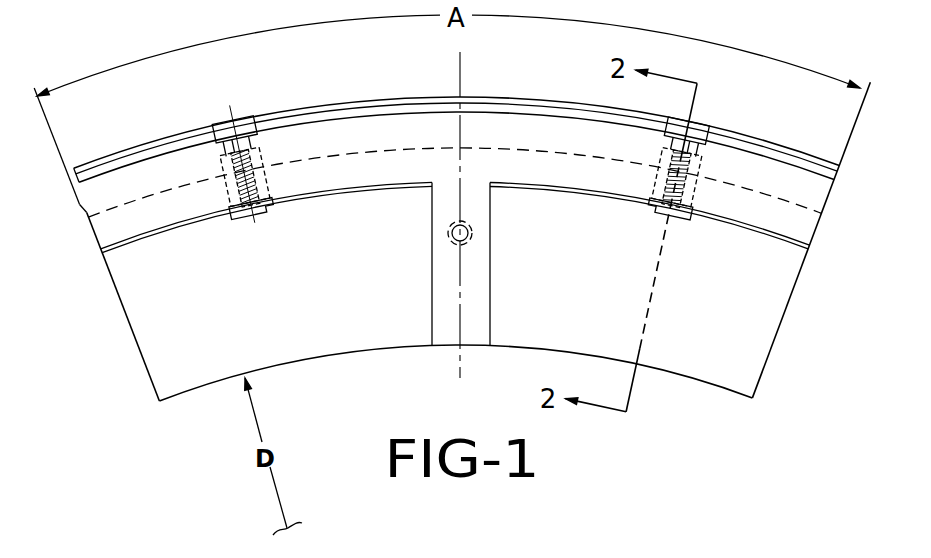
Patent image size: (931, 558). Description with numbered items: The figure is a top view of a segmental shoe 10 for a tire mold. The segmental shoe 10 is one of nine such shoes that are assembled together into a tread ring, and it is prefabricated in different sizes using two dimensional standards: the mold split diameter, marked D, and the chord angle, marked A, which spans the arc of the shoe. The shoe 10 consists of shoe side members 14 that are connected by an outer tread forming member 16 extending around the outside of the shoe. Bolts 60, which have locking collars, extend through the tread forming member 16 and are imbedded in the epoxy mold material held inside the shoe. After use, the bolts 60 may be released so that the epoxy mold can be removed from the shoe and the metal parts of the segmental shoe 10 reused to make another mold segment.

The segmental shoe 10 is at (795, 186).
The shoe side members 14 is at (750, 310).
The outer tread forming member 16 is at (342, 116).
The bolt 60 is at (220, 127).